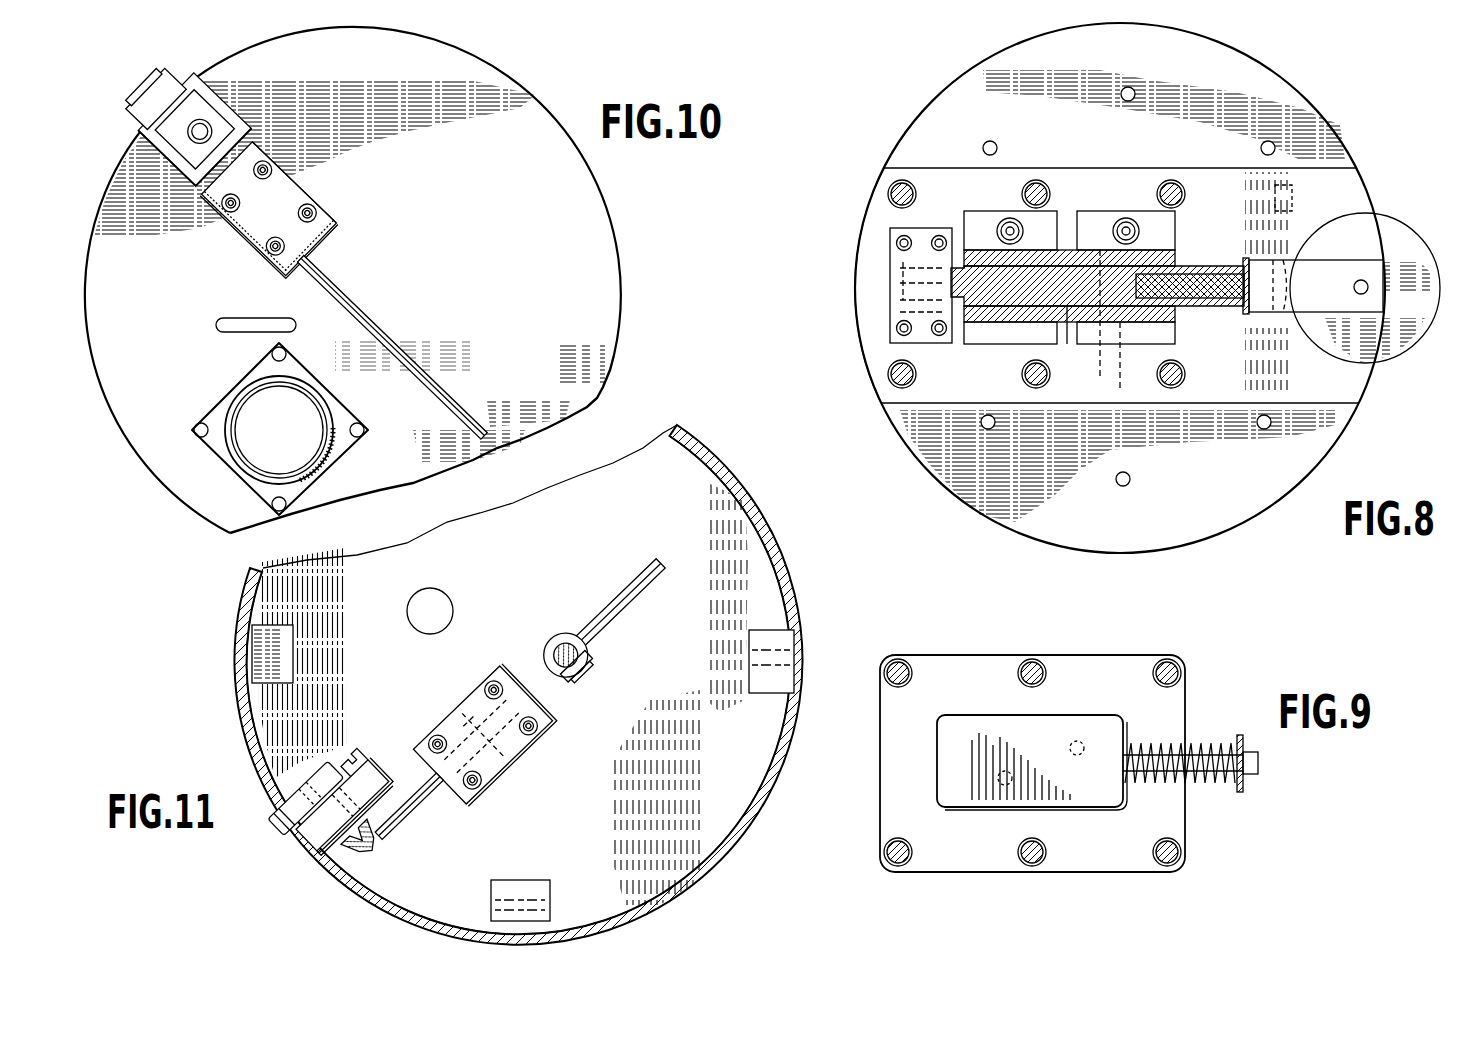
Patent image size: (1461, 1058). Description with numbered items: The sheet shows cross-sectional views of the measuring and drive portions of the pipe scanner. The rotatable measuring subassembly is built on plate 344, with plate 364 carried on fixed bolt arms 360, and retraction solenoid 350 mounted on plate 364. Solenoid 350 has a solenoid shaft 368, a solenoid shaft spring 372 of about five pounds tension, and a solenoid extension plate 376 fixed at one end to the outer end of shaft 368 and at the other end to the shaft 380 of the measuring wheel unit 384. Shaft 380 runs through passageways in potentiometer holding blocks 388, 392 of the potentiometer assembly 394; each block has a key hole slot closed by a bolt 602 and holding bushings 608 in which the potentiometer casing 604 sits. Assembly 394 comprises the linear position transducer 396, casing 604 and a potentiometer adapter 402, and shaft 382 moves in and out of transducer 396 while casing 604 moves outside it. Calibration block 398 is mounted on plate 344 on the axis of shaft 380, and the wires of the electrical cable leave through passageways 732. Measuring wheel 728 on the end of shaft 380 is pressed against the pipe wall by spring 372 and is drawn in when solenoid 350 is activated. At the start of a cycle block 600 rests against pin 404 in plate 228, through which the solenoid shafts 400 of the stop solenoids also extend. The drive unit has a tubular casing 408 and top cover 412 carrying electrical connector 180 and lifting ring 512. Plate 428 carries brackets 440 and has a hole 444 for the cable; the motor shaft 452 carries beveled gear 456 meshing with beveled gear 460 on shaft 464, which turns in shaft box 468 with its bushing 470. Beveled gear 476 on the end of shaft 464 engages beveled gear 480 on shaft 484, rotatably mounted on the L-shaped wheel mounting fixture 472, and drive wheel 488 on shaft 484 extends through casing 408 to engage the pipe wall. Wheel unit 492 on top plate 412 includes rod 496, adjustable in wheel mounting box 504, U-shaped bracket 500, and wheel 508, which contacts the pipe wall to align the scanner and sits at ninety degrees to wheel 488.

In FIG. 10, the electrical connector 180 is at (246, 410).
In FIG. 8, the plate 228 is at (1205, 538).
In FIG. 8, the plate 344 is at (1358, 388).
In FIG. 9, the retraction solenoid 350 is at (994, 818).
In FIG. 8, the fixed bolt arms 360 is at (908, 182).
In FIG. 9, the fixed bolt arms 360 is at (1169, 660).
In FIG. 9, the plate 364 is at (893, 785).
In FIG. 9, the solenoid shaft 368 is at (1260, 780).
In FIG. 9, the solenoid shaft spring 372 is at (1223, 788).
In FIG. 9, the solenoid extension plate 376 is at (1265, 735).
In FIG. 8, the shaft 380 is at (1272, 314).
In FIG. 8, the shaft 382 is at (1180, 300).
In FIG. 8, the measuring wheel unit 384 is at (854, 218).
In FIG. 8, the potentiometer holding block 388 is at (1005, 324).
In FIG. 8, the potentiometer holding block 392 is at (1064, 344).
In FIG. 8, the potentiometer assembly 394 is at (1004, 208).
In FIG. 8, the linear position transducer 396 is at (985, 262).
In FIG. 8, the calibration block 398 is at (890, 314).
In FIG. 8, the solenoid shaft 400 is at (1134, 90).
In FIG. 8, the potentiometer adapter 402 is at (1240, 266).
In FIG. 8, the pin 404 is at (1266, 430).
In FIG. 11, the tubular casing 408 is at (762, 516).
In FIG. 10, the top cover 412 is at (604, 262).
In FIG. 11, the plate 428 is at (745, 808).
In FIG. 11, the brackets 440 is at (290, 662).
In FIG. 11, the hole 444 is at (435, 600).
In FIG. 11, the shaft 452 is at (585, 657).
In FIG. 11, the beveled gear 456 is at (573, 679).
In FIG. 11, the beveled gear 460 is at (557, 692).
In FIG. 11, the shaft 464 is at (645, 572).
In FIG. 11, the shaft box 468 is at (485, 795).
In FIG. 11, the bushing 470 is at (540, 732).
In FIG. 11, the L-shaped wheel mounting fixture 472 is at (377, 768).
In FIG. 11, the beveled gear 476 is at (390, 850).
In FIG. 11, the beveled gear 480 is at (345, 856).
In FIG. 11, the shaft 484 is at (306, 840).
In FIG. 11, the drive wheel 488 is at (270, 816).
In FIG. 10, the wheel unit 492 is at (276, 162).
In FIG. 10, the rod 496 is at (372, 310).
In FIG. 10, the U-shaped bracket 500 is at (195, 160).
In FIG. 10, the wheel mounting box 504 is at (248, 232).
In FIG. 10, the wheel 508 is at (140, 97).
In FIG. 10, the lifting ring 512 is at (258, 320).
In FIG. 8, the block 600 is at (1293, 200).
In FIG. 8, the bolt 602 is at (1127, 220).
In FIG. 8, the potentiometer casing 604 is at (1090, 324).
In FIG. 8, the bushings 608 is at (985, 342).
In FIG. 8, the measuring wheel 728 is at (1392, 340).
In FIG. 8, the passageways 732 is at (1120, 380).